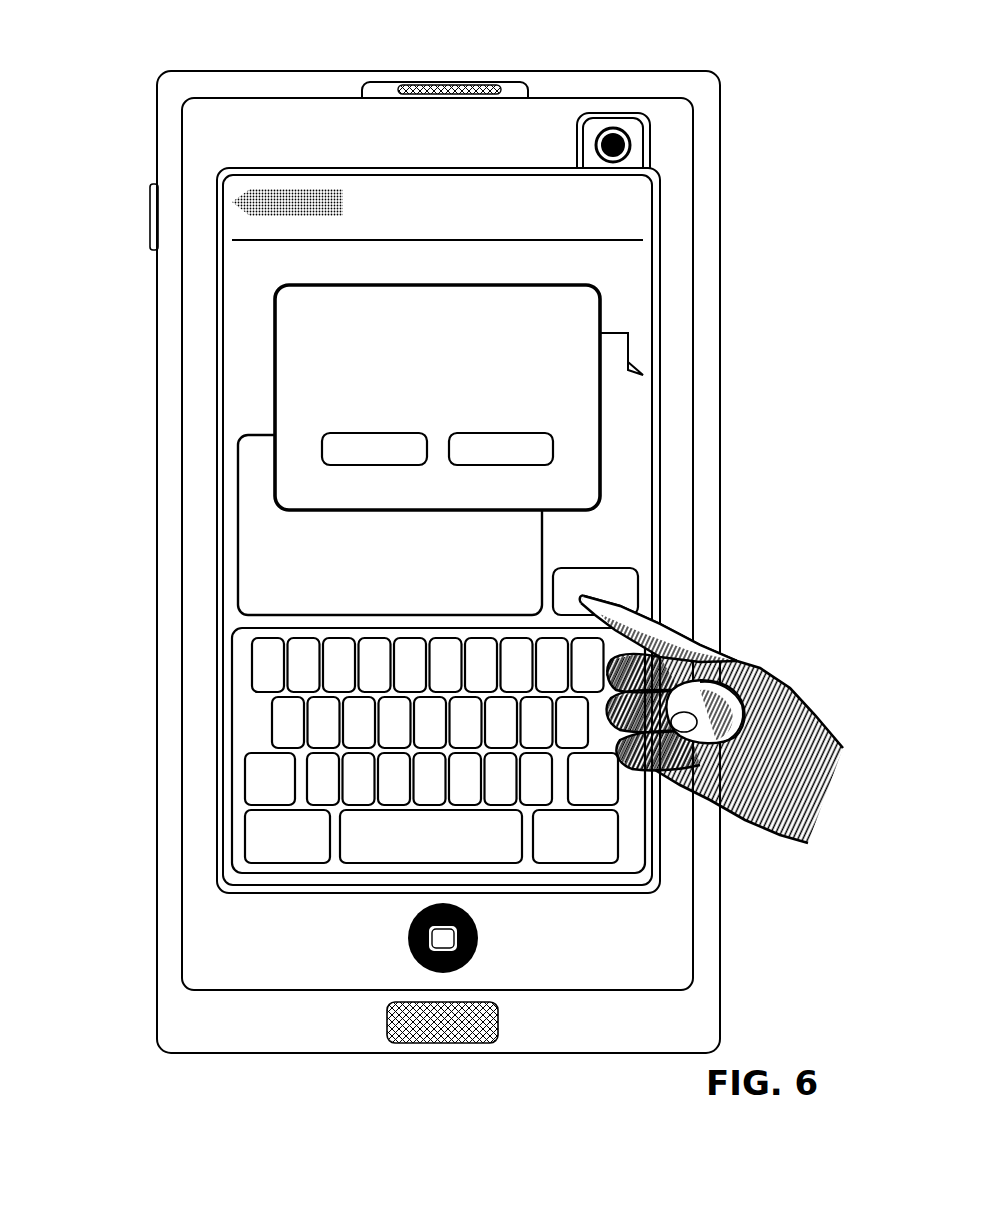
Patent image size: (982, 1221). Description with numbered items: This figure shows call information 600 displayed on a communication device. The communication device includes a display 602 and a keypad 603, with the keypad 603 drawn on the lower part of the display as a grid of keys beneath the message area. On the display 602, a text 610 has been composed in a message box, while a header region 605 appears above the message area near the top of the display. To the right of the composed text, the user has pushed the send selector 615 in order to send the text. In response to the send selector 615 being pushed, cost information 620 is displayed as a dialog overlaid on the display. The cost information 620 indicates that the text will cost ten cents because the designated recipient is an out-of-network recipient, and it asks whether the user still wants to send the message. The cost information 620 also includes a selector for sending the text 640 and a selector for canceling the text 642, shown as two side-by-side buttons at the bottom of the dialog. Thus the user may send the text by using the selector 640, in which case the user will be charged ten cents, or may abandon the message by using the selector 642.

The call information 600 is at (777, 75).
The display 602 is at (253, 299).
The message header with recipient name 605 is at (508, 198).
The text 610 is at (240, 528).
The send selector 615 is at (638, 601).
The cost information 620 is at (307, 338).
The selector for sending the text 640 is at (322, 450).
The selector for canceling the text 642 is at (553, 449).
The keypad 603 is at (240, 675).